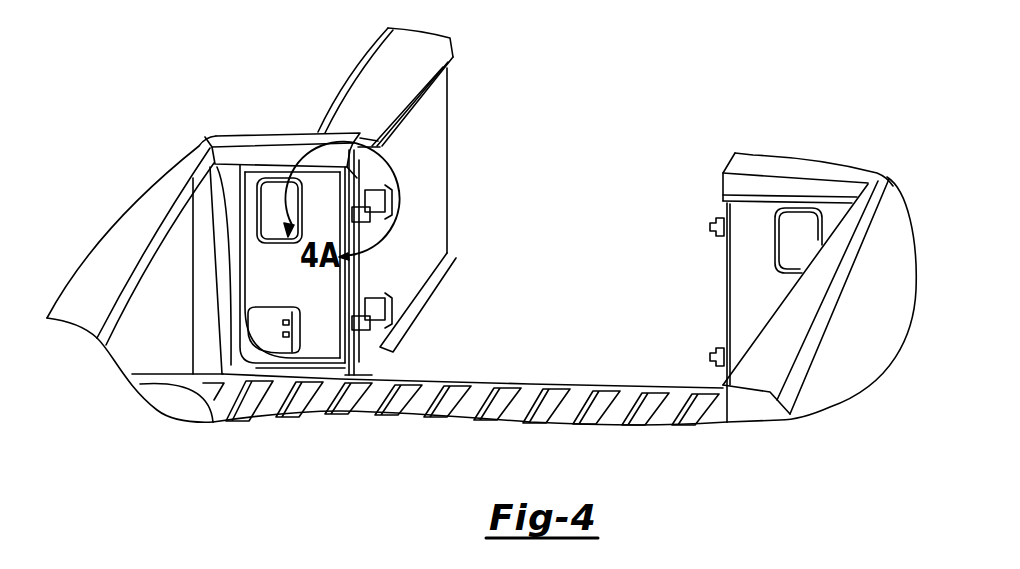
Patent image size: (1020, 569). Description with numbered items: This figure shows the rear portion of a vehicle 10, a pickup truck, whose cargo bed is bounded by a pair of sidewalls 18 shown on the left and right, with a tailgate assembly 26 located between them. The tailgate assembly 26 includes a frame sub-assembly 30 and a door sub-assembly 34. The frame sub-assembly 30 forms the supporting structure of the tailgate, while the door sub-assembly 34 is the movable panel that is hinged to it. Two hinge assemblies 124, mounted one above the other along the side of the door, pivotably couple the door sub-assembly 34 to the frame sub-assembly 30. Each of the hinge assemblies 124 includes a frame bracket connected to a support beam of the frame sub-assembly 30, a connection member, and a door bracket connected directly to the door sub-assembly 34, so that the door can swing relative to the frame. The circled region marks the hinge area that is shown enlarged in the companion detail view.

The vehicle 10 is at (833, 367).
The sidewalls 18 is at (132, 235).
The tailgate assembly 26 is at (288, 148).
The frame sub-assembly 30 is at (258, 157).
The door sub-assembly 34 is at (390, 65).
The hinge assemblies 124 is at (395, 291).